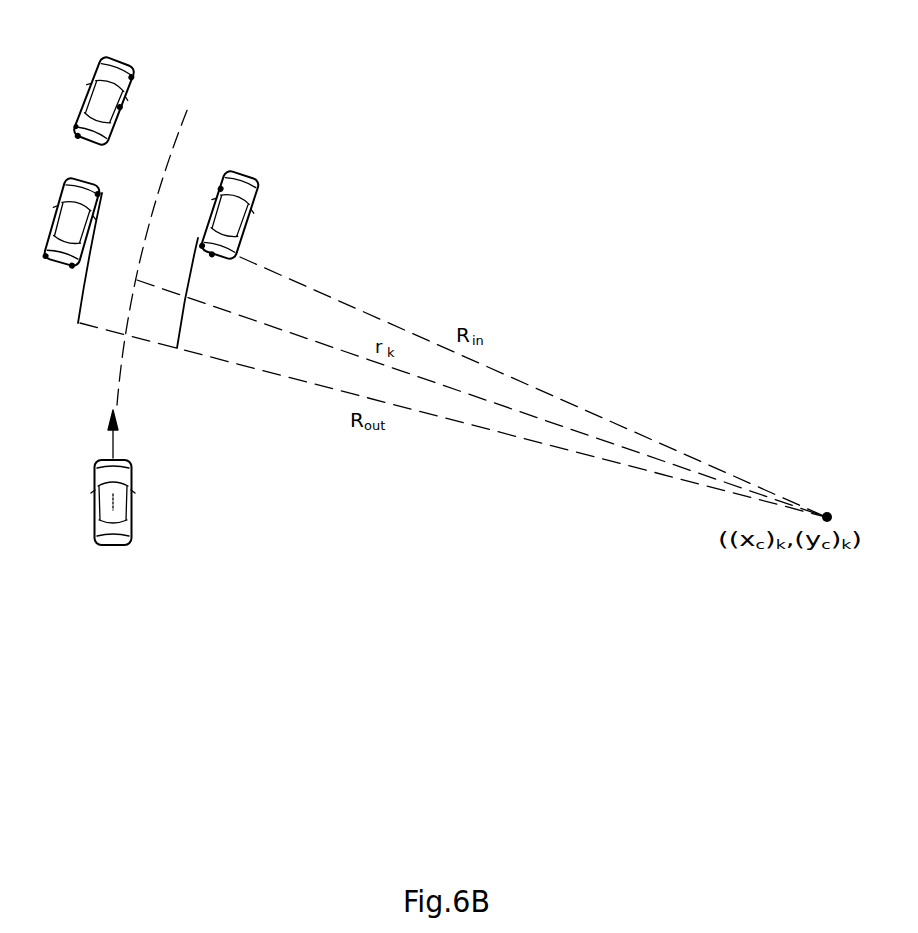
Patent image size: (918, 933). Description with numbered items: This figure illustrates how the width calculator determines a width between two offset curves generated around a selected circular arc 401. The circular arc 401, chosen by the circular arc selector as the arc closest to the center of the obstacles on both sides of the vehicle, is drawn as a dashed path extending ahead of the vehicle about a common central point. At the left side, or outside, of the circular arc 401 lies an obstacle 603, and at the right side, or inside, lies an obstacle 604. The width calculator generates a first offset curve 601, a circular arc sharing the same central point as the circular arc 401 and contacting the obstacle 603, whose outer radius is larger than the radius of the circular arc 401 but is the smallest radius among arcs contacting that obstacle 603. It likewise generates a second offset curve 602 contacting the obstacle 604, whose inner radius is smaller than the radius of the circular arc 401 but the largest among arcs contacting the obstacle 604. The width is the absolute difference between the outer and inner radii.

The circular arc 401 is at (190, 103).
The first offset curve 601 is at (79, 285).
The second offset curve 602 is at (183, 322).
The obstacle 603 is at (60, 187).
The obstacle 604 is at (257, 193).